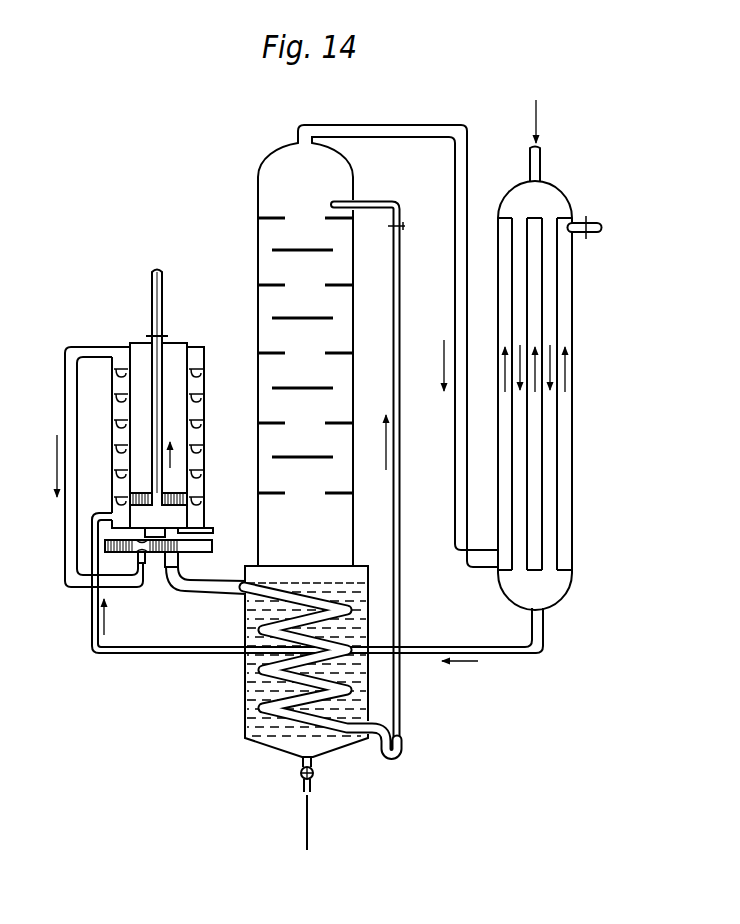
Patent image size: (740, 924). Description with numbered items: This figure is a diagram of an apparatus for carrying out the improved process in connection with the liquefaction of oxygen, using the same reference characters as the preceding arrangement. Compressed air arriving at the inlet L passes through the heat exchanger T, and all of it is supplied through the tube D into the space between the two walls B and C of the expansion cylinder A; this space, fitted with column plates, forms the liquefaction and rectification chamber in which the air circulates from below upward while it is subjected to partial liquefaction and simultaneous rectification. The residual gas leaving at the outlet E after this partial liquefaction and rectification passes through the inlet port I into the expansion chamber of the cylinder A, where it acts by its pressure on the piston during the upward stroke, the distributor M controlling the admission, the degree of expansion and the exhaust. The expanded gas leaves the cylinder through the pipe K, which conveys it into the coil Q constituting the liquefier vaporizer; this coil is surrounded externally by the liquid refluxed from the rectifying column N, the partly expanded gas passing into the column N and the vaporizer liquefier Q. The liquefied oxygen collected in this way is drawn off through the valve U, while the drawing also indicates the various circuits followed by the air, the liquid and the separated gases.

The expansion cylinder A is at (100, 467).
The wall B is at (190, 411).
The wall C is at (210, 384).
The tube D is at (97, 513).
The outlet E is at (136, 382).
The inlet port I is at (137, 570).
The outlet port K is at (180, 568).
The compressed air inlet L is at (541, 161).
The distributor M is at (161, 560).
The rectifying column N is at (344, 380).
The vaporizer liquefier coil Q is at (277, 680).
The heat exchanger T is at (572, 331).
The valve U is at (313, 780).